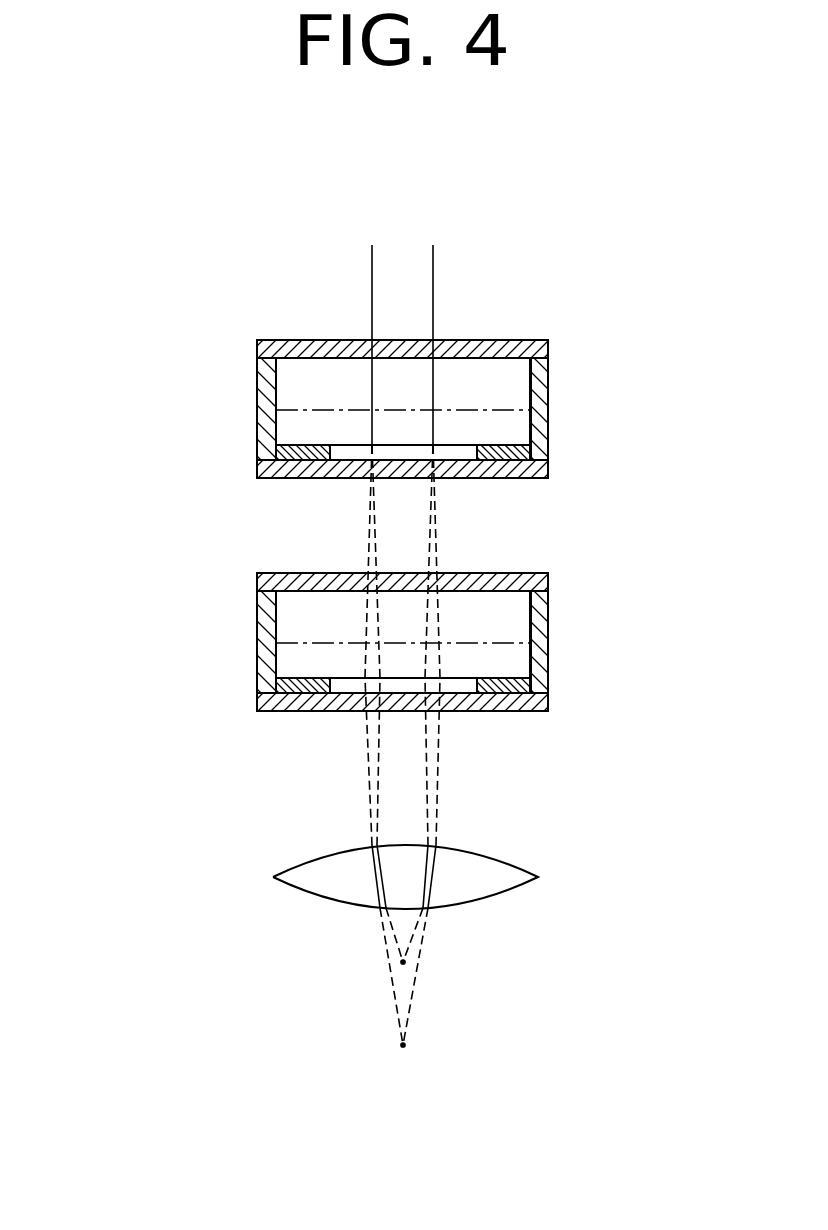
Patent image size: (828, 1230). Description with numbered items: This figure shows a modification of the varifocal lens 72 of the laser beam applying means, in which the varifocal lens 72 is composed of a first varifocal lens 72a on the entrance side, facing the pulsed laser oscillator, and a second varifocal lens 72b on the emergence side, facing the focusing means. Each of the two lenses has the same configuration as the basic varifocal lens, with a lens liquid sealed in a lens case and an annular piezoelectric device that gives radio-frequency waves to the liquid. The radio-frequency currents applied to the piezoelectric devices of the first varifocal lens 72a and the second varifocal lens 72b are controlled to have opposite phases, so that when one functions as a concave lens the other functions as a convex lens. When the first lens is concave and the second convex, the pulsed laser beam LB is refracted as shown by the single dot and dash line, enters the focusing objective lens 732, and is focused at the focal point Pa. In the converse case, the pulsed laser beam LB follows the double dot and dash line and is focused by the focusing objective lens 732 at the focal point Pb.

The pulsed laser beam LB is at (368, 272).
The varifocal lens 72 is at (113, 493).
The first varifocal lens 72a is at (240, 372).
The second varifocal lens 72b is at (238, 628).
The focusing objective lens 732 is at (325, 880).
The focal point Pa is at (401, 962).
The focal point Pb is at (401, 1045).